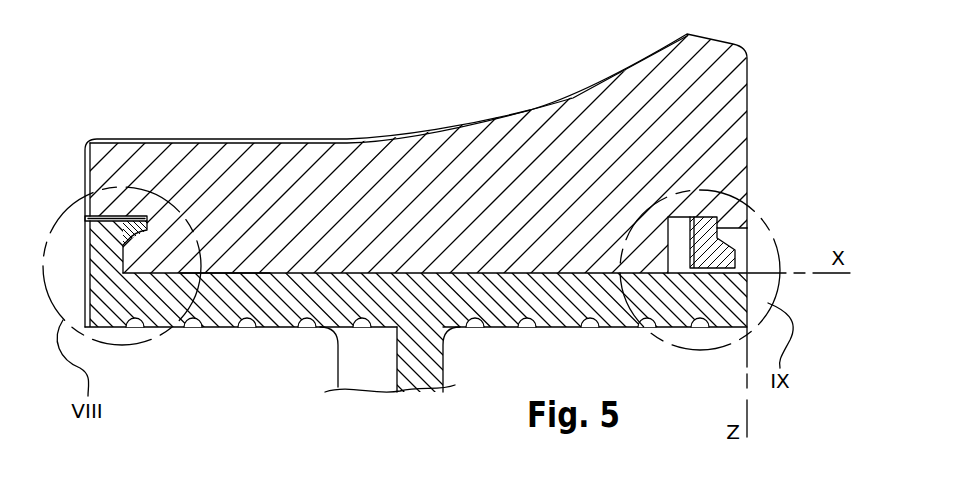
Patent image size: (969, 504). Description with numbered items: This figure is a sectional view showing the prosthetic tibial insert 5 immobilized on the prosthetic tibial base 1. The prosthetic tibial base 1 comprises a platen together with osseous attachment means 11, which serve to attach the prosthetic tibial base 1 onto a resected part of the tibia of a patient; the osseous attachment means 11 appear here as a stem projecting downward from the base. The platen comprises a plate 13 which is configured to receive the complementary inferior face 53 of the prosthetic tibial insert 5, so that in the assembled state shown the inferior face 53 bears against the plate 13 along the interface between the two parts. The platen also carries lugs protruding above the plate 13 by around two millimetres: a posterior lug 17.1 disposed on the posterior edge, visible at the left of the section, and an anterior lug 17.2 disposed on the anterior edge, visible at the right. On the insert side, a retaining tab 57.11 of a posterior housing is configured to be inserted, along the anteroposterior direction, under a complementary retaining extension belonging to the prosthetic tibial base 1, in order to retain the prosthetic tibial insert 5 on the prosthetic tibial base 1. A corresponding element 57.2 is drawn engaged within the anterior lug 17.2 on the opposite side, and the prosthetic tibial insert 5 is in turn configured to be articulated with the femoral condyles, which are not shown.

The prosthetic tibial base 1 is at (273, 300).
The prosthetic tibial insert 5 is at (398, 178).
The osseous attachment means 11 is at (418, 366).
The plate 13 is at (313, 270).
The posterior lug 17.1 is at (98, 245).
The anterior lug 17.2 is at (742, 226).
The inferior face 53 is at (222, 273).
The retaining tab 57.11 is at (135, 250).
The second seal 57.2 is at (705, 243).